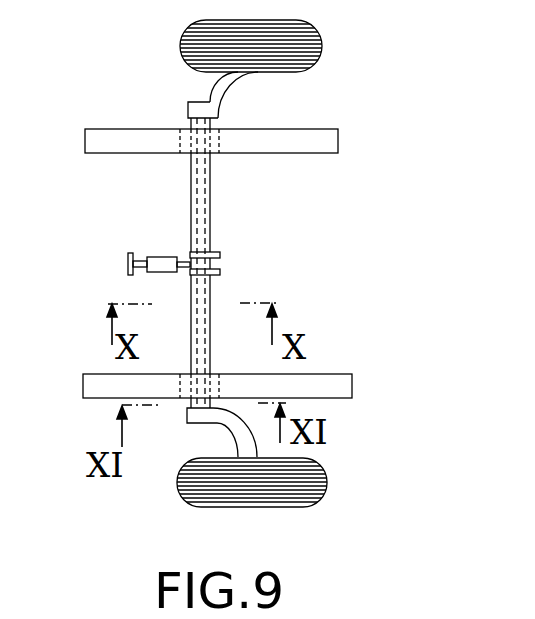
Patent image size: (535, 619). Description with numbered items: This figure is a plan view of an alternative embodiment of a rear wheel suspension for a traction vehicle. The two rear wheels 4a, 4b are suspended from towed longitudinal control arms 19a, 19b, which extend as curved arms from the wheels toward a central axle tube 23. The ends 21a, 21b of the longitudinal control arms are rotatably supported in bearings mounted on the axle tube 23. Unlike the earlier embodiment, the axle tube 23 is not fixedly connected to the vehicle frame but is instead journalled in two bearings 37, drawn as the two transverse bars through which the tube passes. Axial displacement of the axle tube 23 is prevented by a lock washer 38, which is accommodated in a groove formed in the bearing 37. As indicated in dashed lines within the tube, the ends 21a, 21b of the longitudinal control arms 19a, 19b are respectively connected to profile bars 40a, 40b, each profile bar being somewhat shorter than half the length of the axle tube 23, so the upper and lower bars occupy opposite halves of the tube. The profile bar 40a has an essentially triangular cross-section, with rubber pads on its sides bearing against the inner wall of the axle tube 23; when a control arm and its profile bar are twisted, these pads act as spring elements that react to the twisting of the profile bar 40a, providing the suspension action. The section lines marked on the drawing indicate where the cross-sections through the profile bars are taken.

The rear wheel 4a is at (307, 40).
The rear wheel 4b is at (242, 497).
The longitudinal control arm 19a is at (248, 88).
The longitudinal control arm 19b is at (228, 424).
The end of longitudinal control arm 21a is at (188, 115).
The end of longitudinal control arm 21b is at (185, 420).
The bearing 37 is at (178, 148).
The lock washer 38 is at (218, 150).
The profile bar 40a is at (195, 210).
The profile bar 40b is at (202, 302).
The axle tube 23 is at (211, 228).